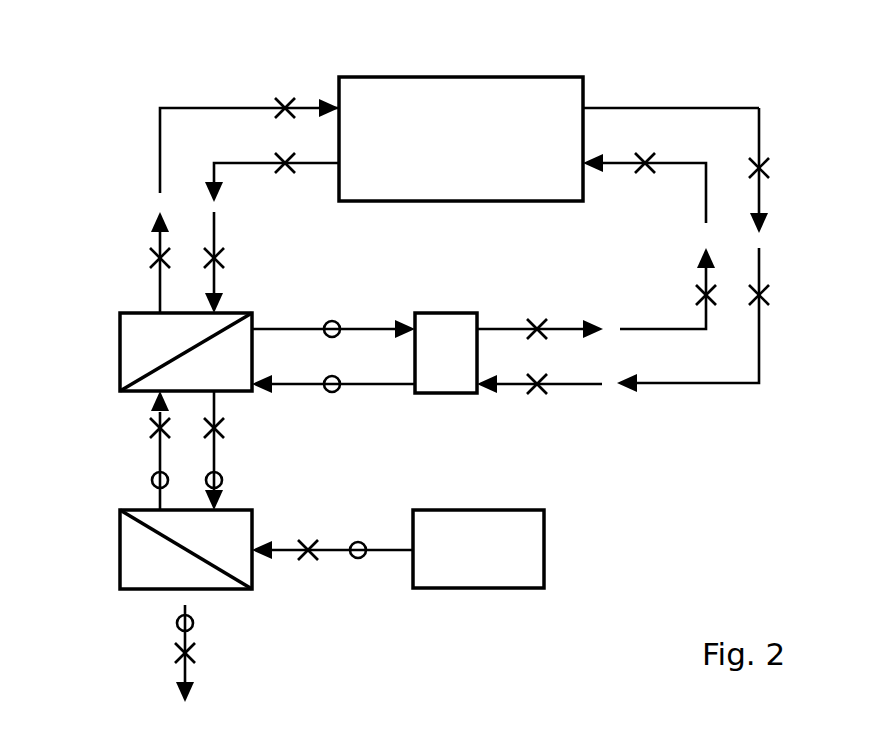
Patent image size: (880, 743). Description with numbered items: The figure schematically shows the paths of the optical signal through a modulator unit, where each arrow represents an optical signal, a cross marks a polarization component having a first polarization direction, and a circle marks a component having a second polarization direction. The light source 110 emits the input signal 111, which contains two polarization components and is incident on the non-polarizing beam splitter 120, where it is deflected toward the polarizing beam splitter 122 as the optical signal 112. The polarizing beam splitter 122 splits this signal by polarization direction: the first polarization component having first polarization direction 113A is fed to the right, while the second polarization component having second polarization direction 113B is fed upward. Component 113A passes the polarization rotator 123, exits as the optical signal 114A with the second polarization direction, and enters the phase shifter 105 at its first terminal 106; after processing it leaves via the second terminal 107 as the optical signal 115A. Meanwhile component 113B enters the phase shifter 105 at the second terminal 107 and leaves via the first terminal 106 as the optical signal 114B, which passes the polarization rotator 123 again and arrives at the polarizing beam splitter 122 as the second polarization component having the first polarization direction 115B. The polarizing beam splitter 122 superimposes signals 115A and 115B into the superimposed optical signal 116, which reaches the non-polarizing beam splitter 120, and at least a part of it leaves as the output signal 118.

The phase shifter 105 is at (463, 77).
The first terminal 106 is at (583, 97).
The second terminal 107 is at (338, 93).
The light source 110 is at (513, 588).
The input signal 111 is at (337, 550).
The optical signal 112 is at (160, 460).
The first polarization component having first polarization direction 113A is at (360, 329).
The second polarization component having second polarization direction 113B is at (158, 242).
The optical signal 114A is at (706, 195).
The optical signal 114B is at (725, 108).
The first polarization component having second polarization direction 115A is at (214, 232).
The second polarization component having first polarization direction 115B is at (386, 384).
The superimposed optical signal 116 is at (214, 452).
The output signal 118 is at (180, 638).
The non-polarizing beam splitter 120 is at (120, 552).
The polarizing beam splitter 122 is at (120, 352).
The polarization rotator 123 is at (449, 383).